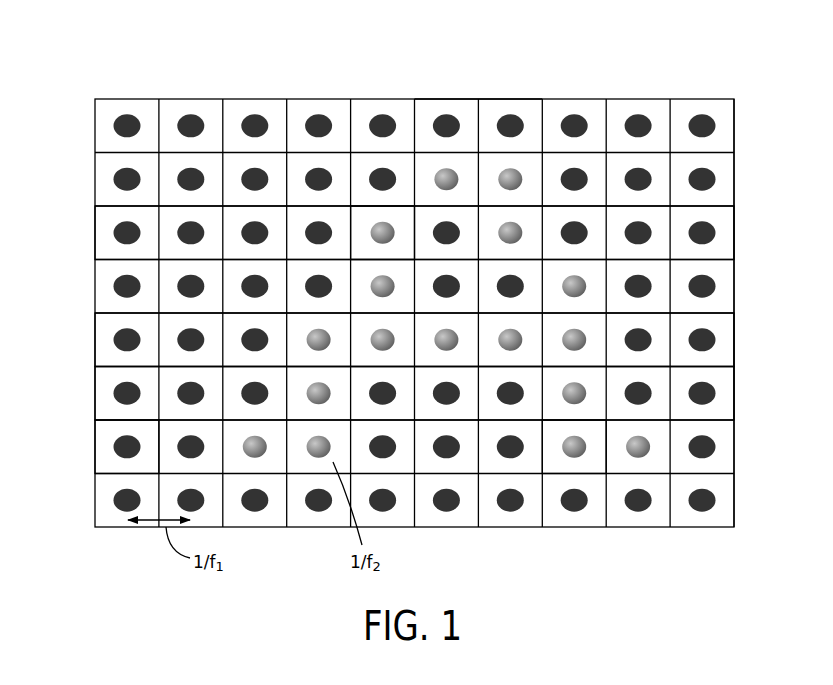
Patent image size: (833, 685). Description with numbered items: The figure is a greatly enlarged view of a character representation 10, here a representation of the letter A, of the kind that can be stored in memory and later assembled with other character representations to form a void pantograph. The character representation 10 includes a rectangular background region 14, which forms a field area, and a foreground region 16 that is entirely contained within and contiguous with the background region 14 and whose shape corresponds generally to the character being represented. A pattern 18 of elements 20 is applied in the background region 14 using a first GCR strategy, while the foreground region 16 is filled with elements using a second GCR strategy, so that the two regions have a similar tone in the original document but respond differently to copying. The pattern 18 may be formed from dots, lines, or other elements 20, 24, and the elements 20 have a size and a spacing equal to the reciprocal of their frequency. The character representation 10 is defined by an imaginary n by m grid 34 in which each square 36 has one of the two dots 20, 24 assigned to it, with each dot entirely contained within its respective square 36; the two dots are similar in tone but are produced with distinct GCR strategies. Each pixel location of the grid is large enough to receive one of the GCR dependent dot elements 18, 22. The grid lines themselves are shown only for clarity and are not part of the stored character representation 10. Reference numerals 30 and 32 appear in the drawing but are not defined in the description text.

The character representation 10 is at (257, 73).
The background region 14 is at (112, 428).
The foreground region 16 is at (594, 463).
The pattern of elements 18 is at (467, 103).
The elements 20 is at (522, 108).
The GCR dependent dot element 22 is at (365, 243).
The dots 24 is at (377, 213).
The first row 30 is at (90, 229).
The array edge 32 is at (738, 207).
The n×m grid 34 is at (85, 327).
The grid square 36 is at (85, 380).